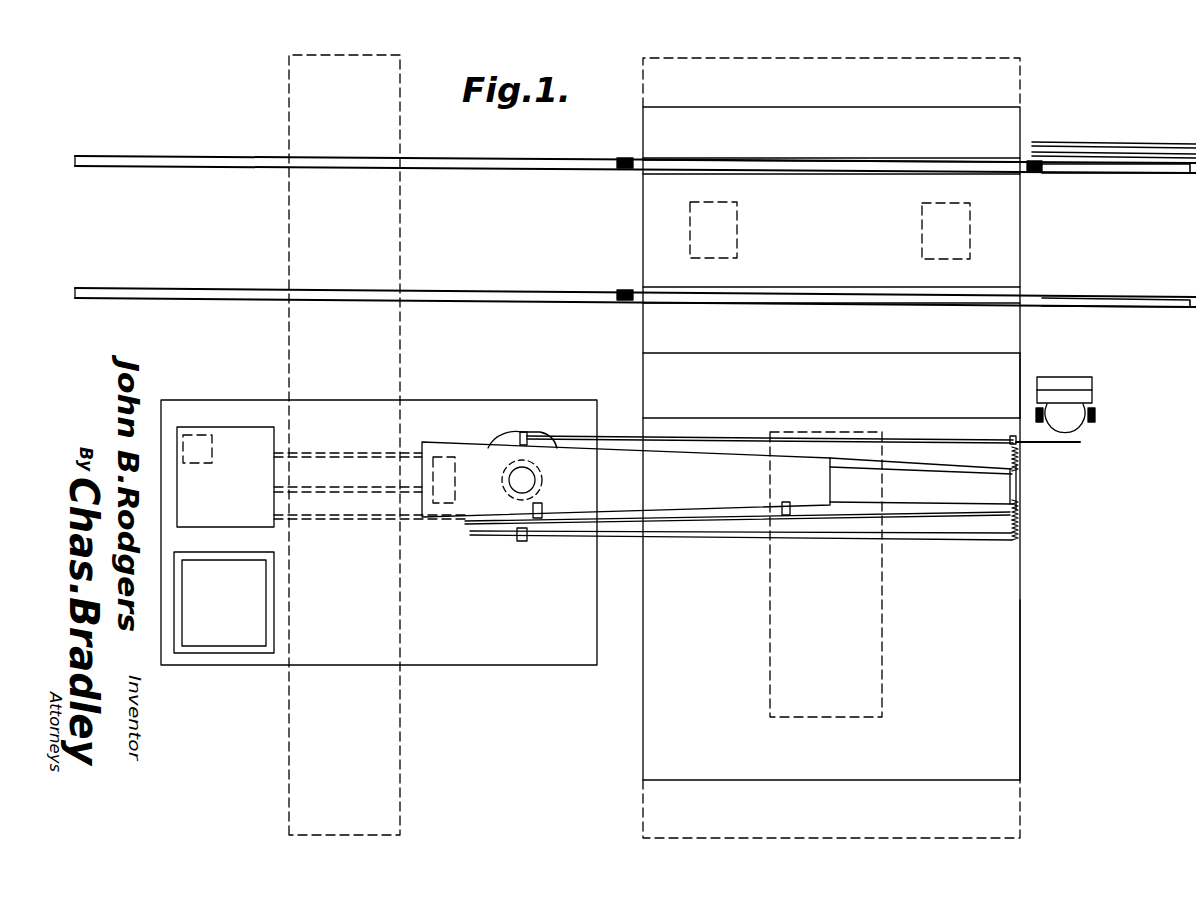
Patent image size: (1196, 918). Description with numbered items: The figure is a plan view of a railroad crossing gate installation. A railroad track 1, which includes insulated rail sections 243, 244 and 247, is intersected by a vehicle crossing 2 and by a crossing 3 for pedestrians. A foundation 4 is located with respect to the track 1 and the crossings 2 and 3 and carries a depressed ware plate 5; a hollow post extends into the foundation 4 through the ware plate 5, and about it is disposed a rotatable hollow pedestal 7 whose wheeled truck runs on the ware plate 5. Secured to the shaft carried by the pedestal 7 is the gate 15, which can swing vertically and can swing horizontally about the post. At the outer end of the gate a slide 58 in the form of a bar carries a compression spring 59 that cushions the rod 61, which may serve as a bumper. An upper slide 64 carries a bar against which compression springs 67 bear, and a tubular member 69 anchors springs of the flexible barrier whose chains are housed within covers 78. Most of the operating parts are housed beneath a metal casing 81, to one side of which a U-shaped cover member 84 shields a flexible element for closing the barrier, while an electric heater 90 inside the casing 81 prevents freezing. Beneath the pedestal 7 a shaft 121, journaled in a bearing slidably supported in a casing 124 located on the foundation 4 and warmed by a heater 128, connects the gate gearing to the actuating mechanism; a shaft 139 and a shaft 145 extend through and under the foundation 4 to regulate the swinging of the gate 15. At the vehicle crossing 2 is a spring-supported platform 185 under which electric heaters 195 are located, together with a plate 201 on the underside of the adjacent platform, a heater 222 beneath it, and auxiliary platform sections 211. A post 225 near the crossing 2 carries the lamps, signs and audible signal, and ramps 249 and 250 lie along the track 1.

The railroad track 1 is at (247, 165).
The vehicle crossing 2 is at (633, 334).
The crossing for pedestrians 3 is at (400, 338).
The foundation 4 is at (515, 659).
The depressed ware plate 5 is at (508, 434).
The hollow pedestal 7 is at (540, 480).
The gate 15 is at (953, 462).
The slide 58 is at (1020, 452).
The compression spring 59 is at (1020, 462).
The rod 61 is at (727, 436).
The upper slide 64 is at (1020, 510).
The compression springs 67 is at (1020, 530).
The tubular member 69 is at (520, 541).
The covers 78 is at (952, 538).
The metal casing 81 is at (610, 455).
The U-shaped cover member 84 is at (707, 520).
The electric heater 90 is at (445, 455).
The shaft 121 is at (350, 521).
The casing 124 is at (237, 432).
The heater 128 is at (208, 451).
The shaft 139 is at (345, 452).
The shaft 145 is at (352, 481).
The platform 185 is at (838, 310).
The electric heater 195 is at (737, 235).
The plate 201 is at (1010, 666).
The auxiliary platform sections 211 is at (1012, 378).
The heater 222 is at (875, 640).
The post 225 is at (1086, 378).
The insulated rail section 243 is at (770, 165).
The insulated rail section 244 is at (1145, 296).
The insulated rail section 247 is at (1131, 177).
The second ramp 249 is at (1140, 152).
The third ramp 250 is at (1062, 143).